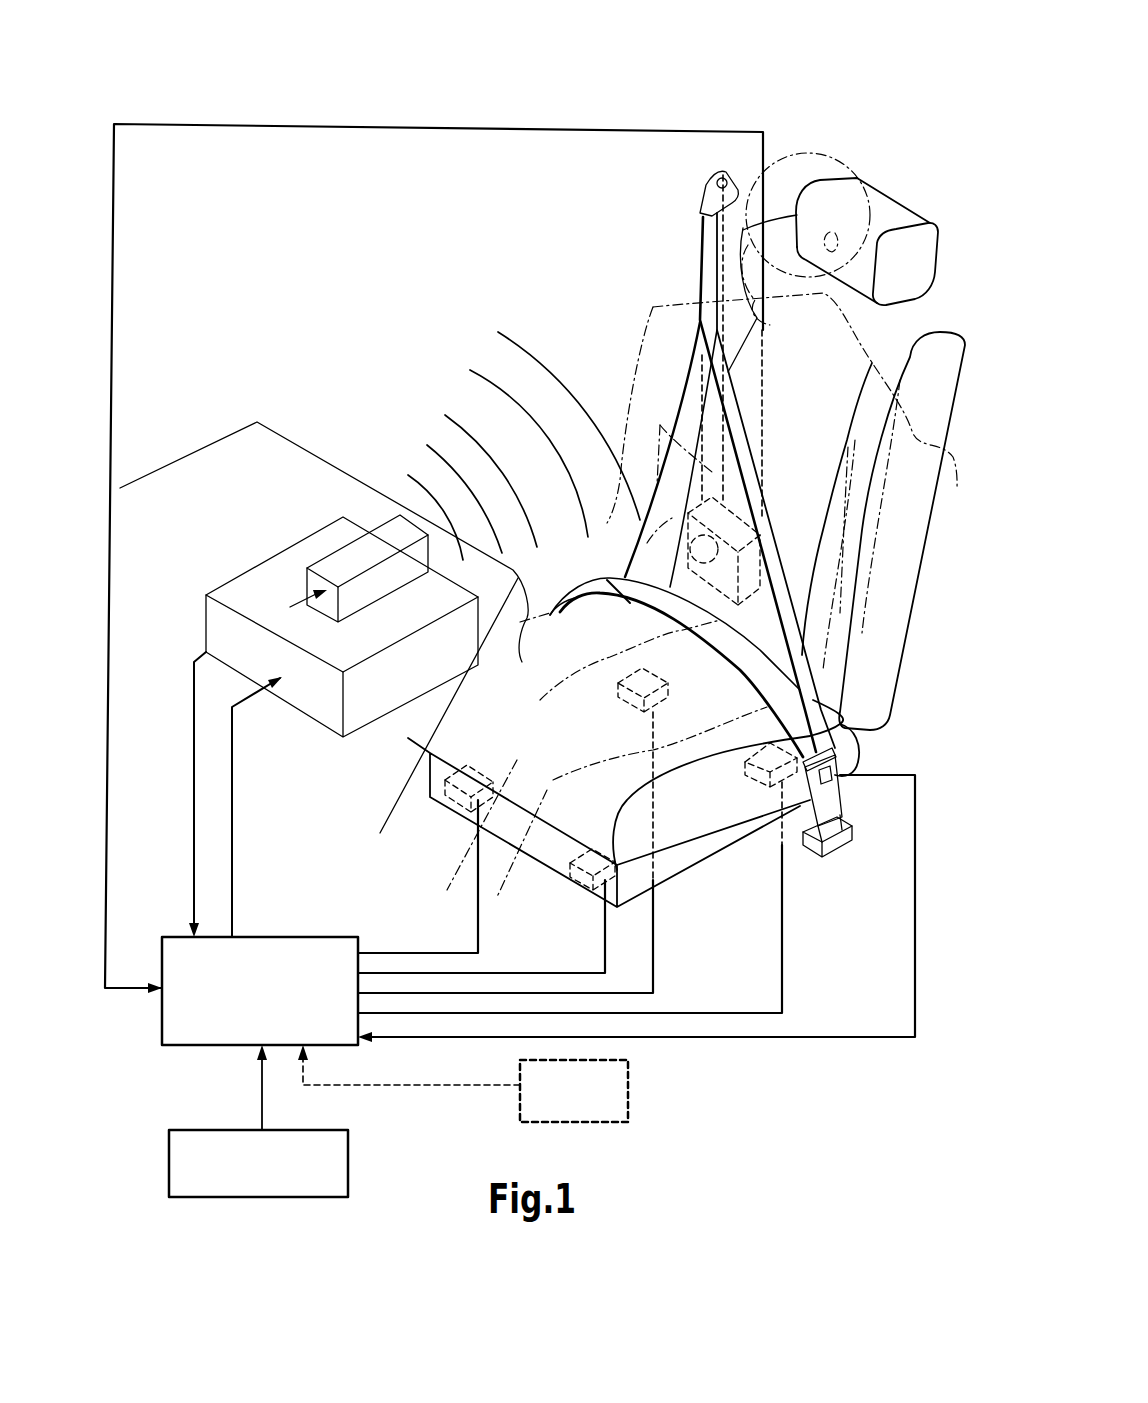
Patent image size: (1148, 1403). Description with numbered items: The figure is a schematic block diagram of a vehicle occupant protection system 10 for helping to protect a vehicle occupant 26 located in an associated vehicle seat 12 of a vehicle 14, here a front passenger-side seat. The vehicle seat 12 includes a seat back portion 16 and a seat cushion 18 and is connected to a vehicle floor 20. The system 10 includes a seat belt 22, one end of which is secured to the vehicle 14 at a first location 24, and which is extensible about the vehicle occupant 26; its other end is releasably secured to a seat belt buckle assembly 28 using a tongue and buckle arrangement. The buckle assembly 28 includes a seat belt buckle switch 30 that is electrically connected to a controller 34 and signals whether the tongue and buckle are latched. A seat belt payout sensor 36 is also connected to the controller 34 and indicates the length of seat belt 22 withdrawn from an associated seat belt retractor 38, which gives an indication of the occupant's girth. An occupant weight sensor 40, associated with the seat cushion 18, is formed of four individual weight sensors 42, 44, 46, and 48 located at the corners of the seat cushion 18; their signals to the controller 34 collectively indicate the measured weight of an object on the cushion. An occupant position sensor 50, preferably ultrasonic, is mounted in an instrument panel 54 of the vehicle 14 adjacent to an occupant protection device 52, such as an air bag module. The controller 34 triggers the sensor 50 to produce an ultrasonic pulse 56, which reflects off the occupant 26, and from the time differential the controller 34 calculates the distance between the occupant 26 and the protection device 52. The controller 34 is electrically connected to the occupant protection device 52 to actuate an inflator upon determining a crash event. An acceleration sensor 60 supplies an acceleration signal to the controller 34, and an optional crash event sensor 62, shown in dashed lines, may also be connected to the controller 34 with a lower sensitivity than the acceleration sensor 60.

The vehicle occupant protection system 10 is at (410, 312).
The vehicle seat 12 is at (693, 560).
The vehicle 14 is at (641, 529).
The seat back portion 16 is at (909, 551).
The seat cushion 18 is at (677, 827).
The vehicle floor 20 is at (668, 878).
The seat belt 22 is at (692, 270).
The first location 24 is at (688, 566).
The vehicle occupant 26 is at (938, 462).
The seat belt buckle assembly 28 is at (840, 750).
The seat belt buckle switch 30 is at (832, 785).
The controller 34 is at (197, 1045).
The seat belt payout sensor 36 is at (766, 568).
The seat belt retractor 38 is at (690, 541).
The occupant weight sensor 40 is at (810, 871).
The weight sensor 42 is at (433, 767).
The weight sensor 44 is at (620, 680).
The weight sensor 46 is at (765, 784).
The weight sensor 48 is at (603, 847).
The occupant position sensor 50 is at (333, 563).
The occupant protection device 52 is at (338, 718).
The instrument panel 54 is at (172, 462).
The ultrasonic pulse 56 is at (452, 410).
The acceleration sensor 60 is at (348, 1163).
The crash event sensor 62 is at (628, 1080).